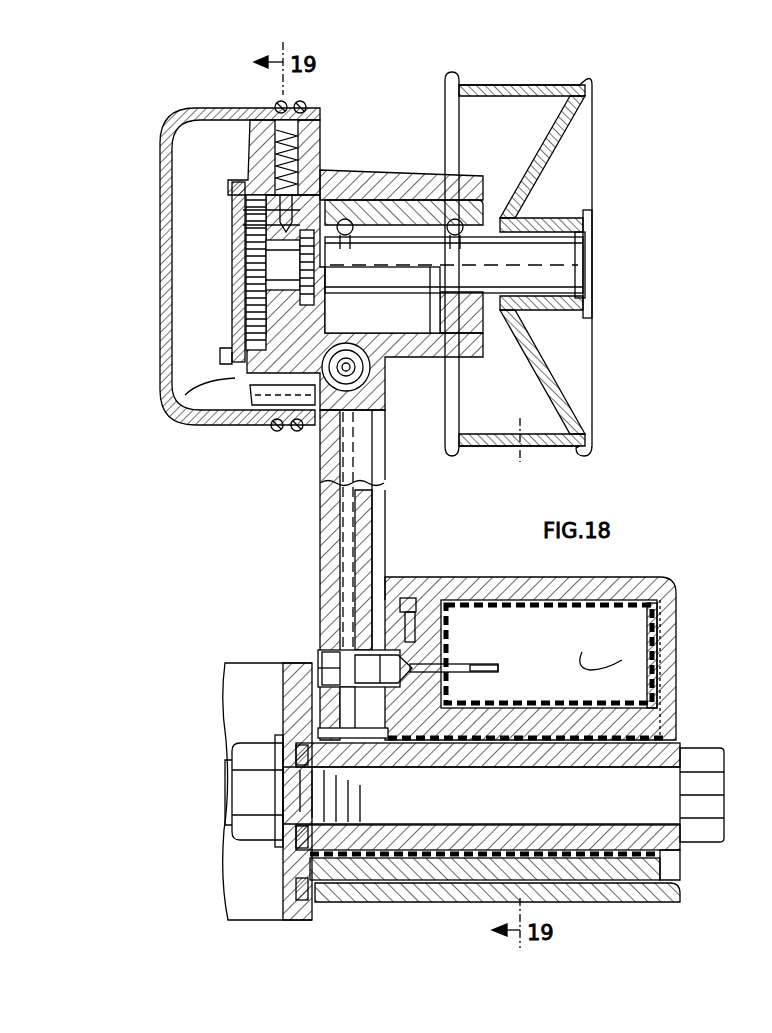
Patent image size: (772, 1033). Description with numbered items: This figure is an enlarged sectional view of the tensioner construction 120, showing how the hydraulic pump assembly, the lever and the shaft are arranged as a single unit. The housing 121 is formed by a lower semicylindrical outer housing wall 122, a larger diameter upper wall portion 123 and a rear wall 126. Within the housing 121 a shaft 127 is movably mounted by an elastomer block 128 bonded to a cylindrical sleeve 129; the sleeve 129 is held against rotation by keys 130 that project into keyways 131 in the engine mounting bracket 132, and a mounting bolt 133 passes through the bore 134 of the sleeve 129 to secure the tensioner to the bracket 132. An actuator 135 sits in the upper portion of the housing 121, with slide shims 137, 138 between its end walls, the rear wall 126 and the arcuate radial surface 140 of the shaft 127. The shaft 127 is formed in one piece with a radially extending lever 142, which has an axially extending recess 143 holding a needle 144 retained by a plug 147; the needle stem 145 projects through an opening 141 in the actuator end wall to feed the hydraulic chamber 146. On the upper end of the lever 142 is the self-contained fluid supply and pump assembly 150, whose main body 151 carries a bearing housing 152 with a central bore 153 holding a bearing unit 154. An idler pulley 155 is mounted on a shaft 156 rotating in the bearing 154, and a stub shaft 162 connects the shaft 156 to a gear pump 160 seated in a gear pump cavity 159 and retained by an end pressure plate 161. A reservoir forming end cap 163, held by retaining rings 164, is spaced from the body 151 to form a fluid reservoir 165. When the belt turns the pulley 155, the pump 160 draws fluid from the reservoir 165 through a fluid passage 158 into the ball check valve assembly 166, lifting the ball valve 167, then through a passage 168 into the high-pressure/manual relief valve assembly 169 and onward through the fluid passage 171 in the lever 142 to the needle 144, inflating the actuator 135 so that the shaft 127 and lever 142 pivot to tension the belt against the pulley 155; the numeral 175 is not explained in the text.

The self-contained fluid supply and pump assembly 150 is at (224, 98).
The main body 151 is at (312, 142).
The bearing housing 152 is at (398, 178).
The central bore 153 is at (478, 180).
The bearing unit 154 is at (413, 318).
The idler pulley 155 is at (548, 88).
The shaft 156 is at (565, 262).
The fluid passage 158 is at (262, 216).
The gear pump cavity 159 is at (234, 345).
The gear pump 160 is at (262, 240).
The end pressure plate 161 is at (238, 204).
The stub shaft 162 is at (274, 268).
The reservoir forming end cap 163 is at (164, 382).
The retaining rings 164 is at (275, 432).
The fluid reservoir 165 is at (188, 395).
The ball check valve assembly 166 is at (272, 160).
The ball valve 167 is at (298, 205).
The passage 168 is at (318, 300).
The high-pressure/manual relief valve assembly 169 is at (375, 392).
The fluid passage 171 is at (356, 509).
The plate 175 is at (256, 402).
The tensioner construction 120 is at (305, 546).
The housing 121 is at (632, 580).
The lower semicylindrical-shaped outer housing wall 122 is at (606, 900).
The upper wall portion 123 is at (520, 590).
The rear wall 126 is at (676, 614).
The shaft 127 is at (660, 722).
The elastomer block 128 is at (672, 870).
The cylindrical sleeve 129 is at (665, 752).
The keys 130 is at (300, 745).
The keyways 131 is at (302, 840).
The engine mounting bracket 132 is at (246, 882).
The mounting bolt 133 is at (302, 792).
The bore 134 is at (680, 812).
The actuator 135 is at (548, 590).
The slide shim 137 is at (668, 648).
The slide shim 138 is at (400, 688).
The arcuate-shaped radially extending surface 140 is at (462, 600).
The opening 141 is at (462, 678).
The lever 142 is at (325, 580).
The recess 143 is at (318, 655).
The needle 144 is at (372, 736).
The needle stem 145 is at (496, 664).
The hydraulic chamber 146 is at (664, 660).
The plug 147 is at (326, 670).